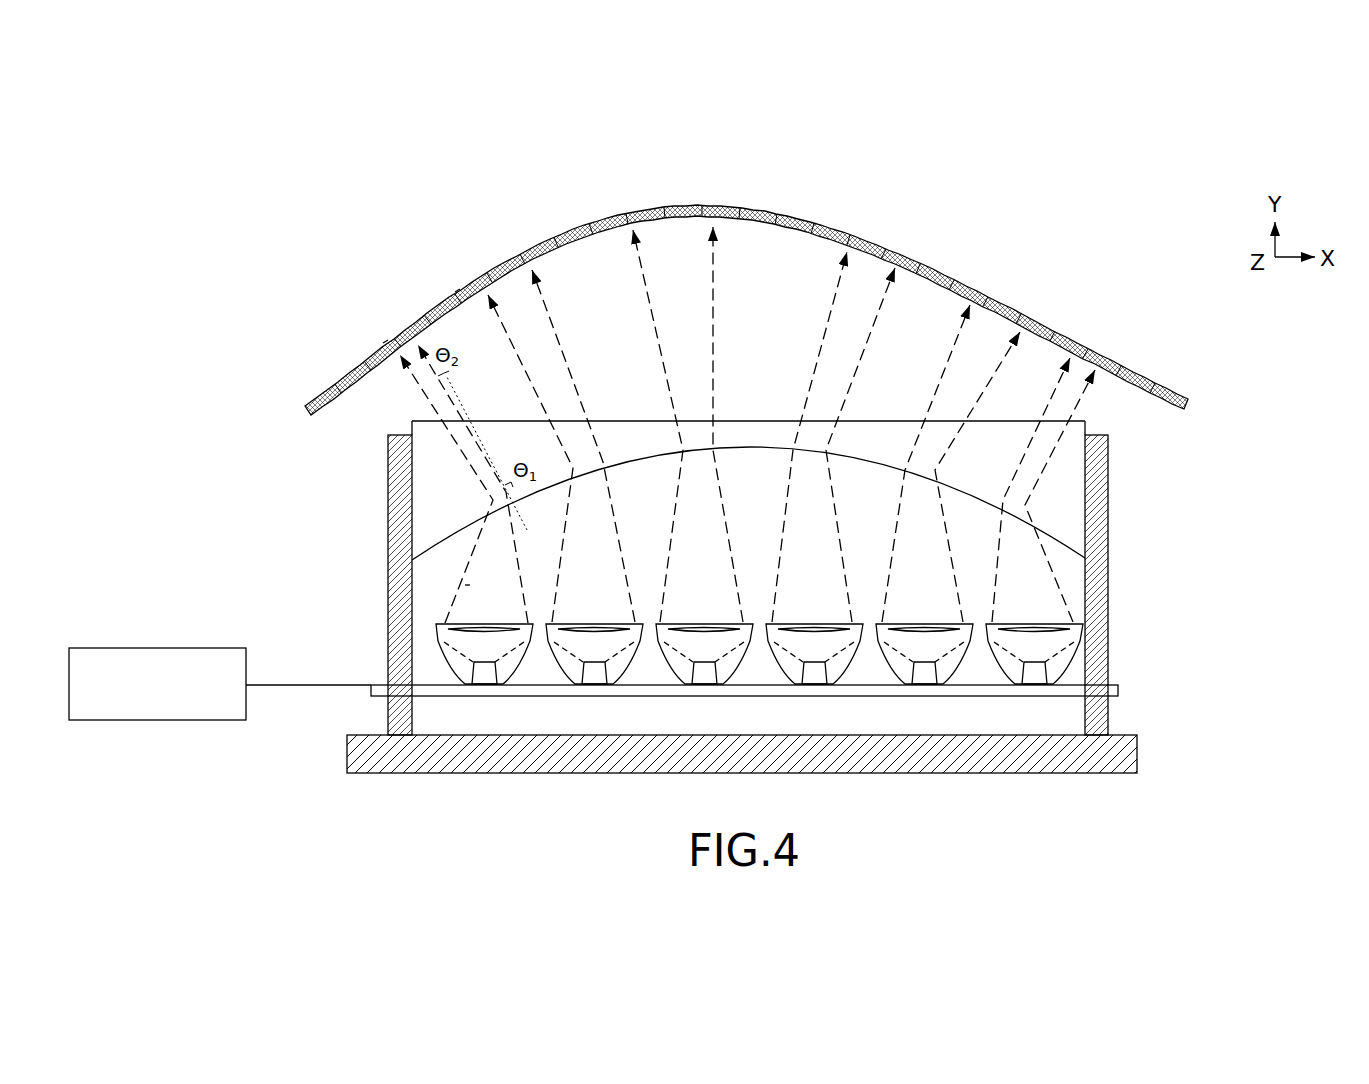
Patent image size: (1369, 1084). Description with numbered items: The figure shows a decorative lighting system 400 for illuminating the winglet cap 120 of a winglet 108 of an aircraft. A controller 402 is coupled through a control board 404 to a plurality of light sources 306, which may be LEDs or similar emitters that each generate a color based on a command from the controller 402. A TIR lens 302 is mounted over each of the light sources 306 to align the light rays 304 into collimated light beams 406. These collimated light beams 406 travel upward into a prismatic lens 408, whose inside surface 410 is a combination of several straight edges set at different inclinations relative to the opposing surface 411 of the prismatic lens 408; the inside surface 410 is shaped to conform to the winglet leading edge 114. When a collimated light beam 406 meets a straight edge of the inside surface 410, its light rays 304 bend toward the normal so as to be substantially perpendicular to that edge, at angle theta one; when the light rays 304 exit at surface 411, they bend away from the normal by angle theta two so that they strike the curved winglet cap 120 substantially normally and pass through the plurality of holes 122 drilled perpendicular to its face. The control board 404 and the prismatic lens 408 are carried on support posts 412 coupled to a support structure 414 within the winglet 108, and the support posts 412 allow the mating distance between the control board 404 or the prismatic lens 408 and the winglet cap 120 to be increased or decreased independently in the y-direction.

The winglet leading edge 114 is at (697, 206).
The winglet cap 120 is at (453, 290).
The plurality of holes 122 is at (383, 343).
The winglet 108 is at (1150, 250).
The light rays 304 is at (642, 277).
The surface of the prismatic lens 411 is at (430, 421).
The prismatic lens 408 is at (432, 475).
The support posts 412 is at (397, 450).
The inside surface 410 is at (467, 510).
The collimated light beams 406 is at (465, 585).
The TIR lens 302 is at (438, 640).
The light sources 306 is at (483, 678).
The control board 404 is at (380, 690).
The support structure 414 is at (362, 747).
The controller 402 is at (220, 684).
The lighting system 400 is at (1188, 548).